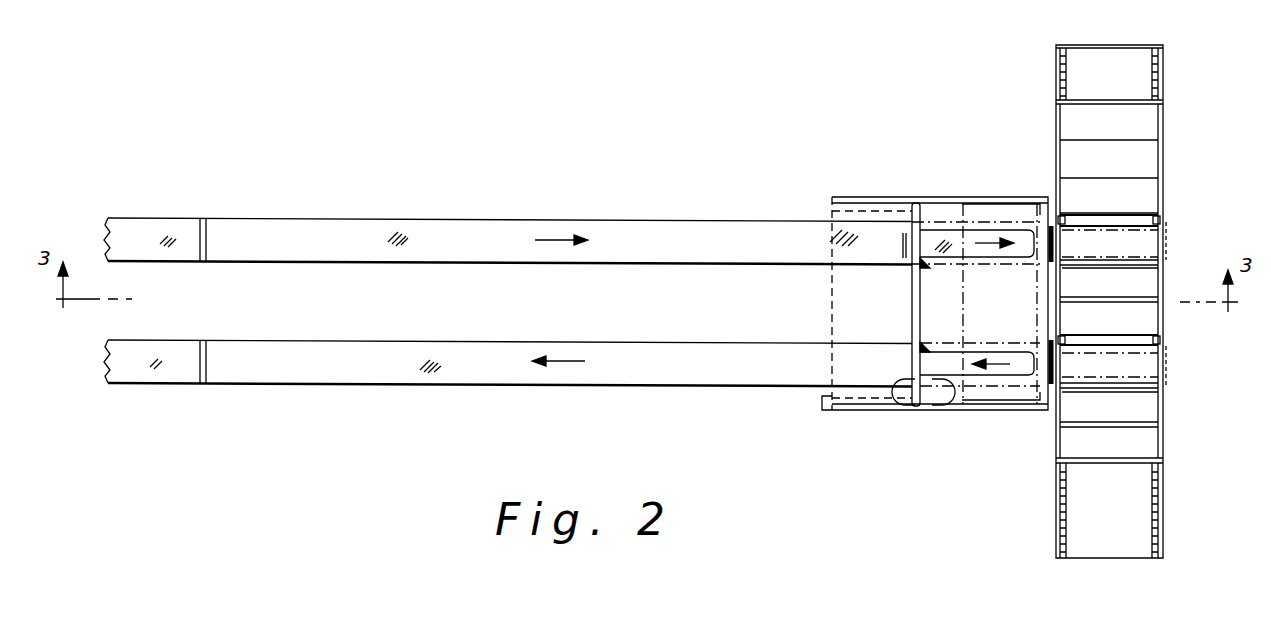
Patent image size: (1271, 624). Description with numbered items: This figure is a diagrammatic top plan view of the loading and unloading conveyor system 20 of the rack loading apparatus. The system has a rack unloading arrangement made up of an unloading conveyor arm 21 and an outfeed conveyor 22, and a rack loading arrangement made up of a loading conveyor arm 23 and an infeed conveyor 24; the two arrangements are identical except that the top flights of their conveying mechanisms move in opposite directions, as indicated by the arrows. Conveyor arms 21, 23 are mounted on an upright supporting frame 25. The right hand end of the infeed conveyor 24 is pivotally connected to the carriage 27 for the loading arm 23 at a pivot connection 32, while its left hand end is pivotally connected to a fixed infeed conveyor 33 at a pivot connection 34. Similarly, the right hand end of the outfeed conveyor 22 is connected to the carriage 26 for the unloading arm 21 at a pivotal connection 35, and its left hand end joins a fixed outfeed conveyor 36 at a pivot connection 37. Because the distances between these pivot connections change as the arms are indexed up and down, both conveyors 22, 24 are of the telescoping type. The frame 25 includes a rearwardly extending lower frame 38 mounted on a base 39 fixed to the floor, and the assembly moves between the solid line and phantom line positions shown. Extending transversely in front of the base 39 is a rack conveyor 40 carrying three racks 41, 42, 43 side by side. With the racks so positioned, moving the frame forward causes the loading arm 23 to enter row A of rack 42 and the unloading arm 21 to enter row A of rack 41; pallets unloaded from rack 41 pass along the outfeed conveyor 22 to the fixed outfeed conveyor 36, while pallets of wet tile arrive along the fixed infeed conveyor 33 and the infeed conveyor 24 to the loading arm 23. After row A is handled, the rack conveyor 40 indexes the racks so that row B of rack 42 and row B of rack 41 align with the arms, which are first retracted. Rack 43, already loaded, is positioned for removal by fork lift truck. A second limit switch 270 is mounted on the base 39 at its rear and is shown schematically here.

The loading and unloading conveyor system 20 is at (808, 190).
The unloading conveyor arm 21 is at (945, 406).
The outfeed conveyor 22 is at (678, 383).
The loading conveyor arm 23 is at (946, 229).
The infeed conveyor 24 is at (688, 220).
The upright supporting frame 25 is at (912, 300).
The carriage 26 is at (922, 346).
The carriage 27 is at (926, 264).
The pivot connection 32 is at (908, 232).
The fixed infeed conveyor 33 is at (136, 220).
The pivot connection 34 is at (206, 232).
The pivotal connection 35 is at (900, 406).
The fixed outfeed conveyor 36 is at (156, 384).
The pivot connection 37 is at (206, 372).
The lower frame 38 is at (836, 323).
The base 39 is at (958, 410).
The rack conveyor 40 is at (1117, 548).
The rack 41 is at (1166, 415).
The rack 42 is at (1166, 284).
The rack 43 is at (1166, 152).
The second limit switch 270 is at (822, 408).
The row A is at (1150, 242).
The row B is at (1148, 276).